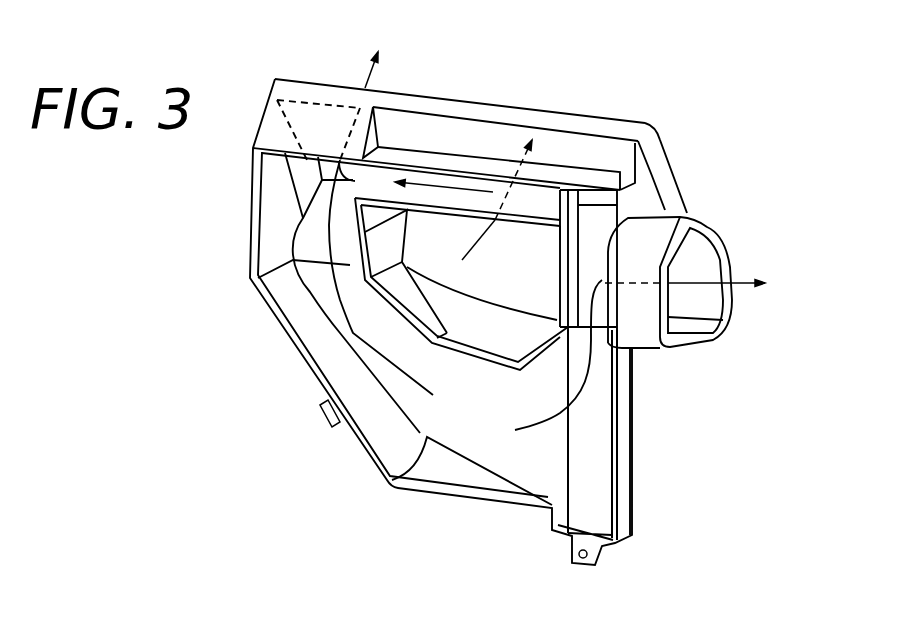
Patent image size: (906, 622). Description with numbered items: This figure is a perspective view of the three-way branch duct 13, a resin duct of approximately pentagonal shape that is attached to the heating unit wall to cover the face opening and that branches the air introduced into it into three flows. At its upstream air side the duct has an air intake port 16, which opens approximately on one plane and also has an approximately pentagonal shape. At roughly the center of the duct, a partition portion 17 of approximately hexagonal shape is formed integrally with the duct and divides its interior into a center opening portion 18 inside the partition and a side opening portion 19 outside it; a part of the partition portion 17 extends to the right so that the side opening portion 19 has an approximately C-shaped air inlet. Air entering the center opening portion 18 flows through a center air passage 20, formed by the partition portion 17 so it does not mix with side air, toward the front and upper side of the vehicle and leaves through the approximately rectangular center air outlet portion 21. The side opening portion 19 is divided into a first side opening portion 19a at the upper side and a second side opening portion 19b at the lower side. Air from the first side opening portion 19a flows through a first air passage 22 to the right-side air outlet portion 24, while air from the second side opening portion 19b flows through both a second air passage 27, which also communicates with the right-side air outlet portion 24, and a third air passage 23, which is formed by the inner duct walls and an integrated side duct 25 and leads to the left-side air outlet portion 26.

The three-way branch duct 13 is at (676, 106).
The air intake port 16 is at (506, 460).
The partition portion 17 is at (400, 315).
The center opening portion 18 is at (461, 212).
The side opening portion 19 is at (378, 430).
The first side opening portion 19a is at (505, 230).
The second side opening portion 19b is at (433, 473).
The center air passage 20 is at (507, 248).
The center air outlet portion 21 is at (538, 110).
The first air passage 22 is at (447, 177).
The third air passage 23 is at (597, 445).
The right-side air outlet portion 24 is at (323, 117).
The side duct 25 is at (697, 223).
The left-side air outlet portion 26 is at (710, 252).
The second air passage 27 is at (332, 312).